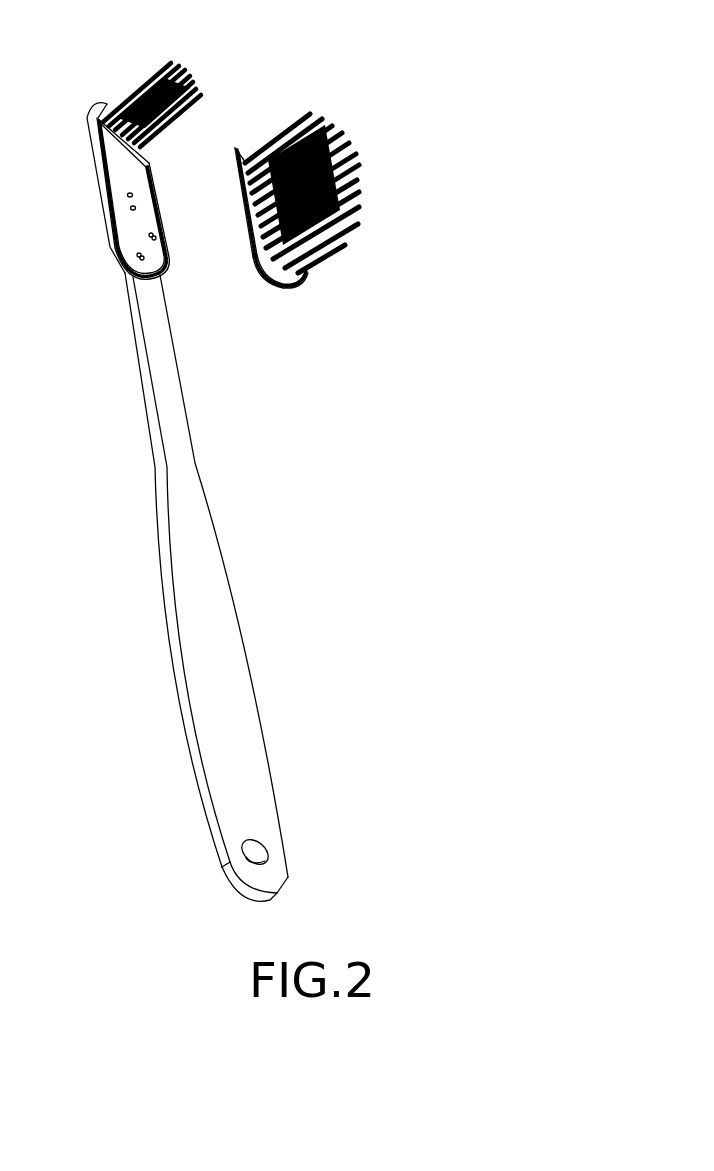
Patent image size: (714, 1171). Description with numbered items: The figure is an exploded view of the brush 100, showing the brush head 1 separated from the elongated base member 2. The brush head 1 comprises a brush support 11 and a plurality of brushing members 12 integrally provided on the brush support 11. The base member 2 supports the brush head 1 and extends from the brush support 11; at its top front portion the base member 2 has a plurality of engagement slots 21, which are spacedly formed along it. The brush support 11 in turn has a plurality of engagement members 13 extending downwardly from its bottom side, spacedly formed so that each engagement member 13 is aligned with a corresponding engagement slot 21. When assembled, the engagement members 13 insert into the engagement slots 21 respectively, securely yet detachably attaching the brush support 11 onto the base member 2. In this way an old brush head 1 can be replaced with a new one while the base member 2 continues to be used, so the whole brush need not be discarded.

The toothbrush 100 is at (443, 123).
The brush head 1 is at (303, 273).
The brush support 11 is at (277, 282).
The brushing members 12 is at (298, 123).
The engagement members 13 is at (250, 237).
The base member 2 is at (98, 177).
The engagement slots 21 is at (135, 208).